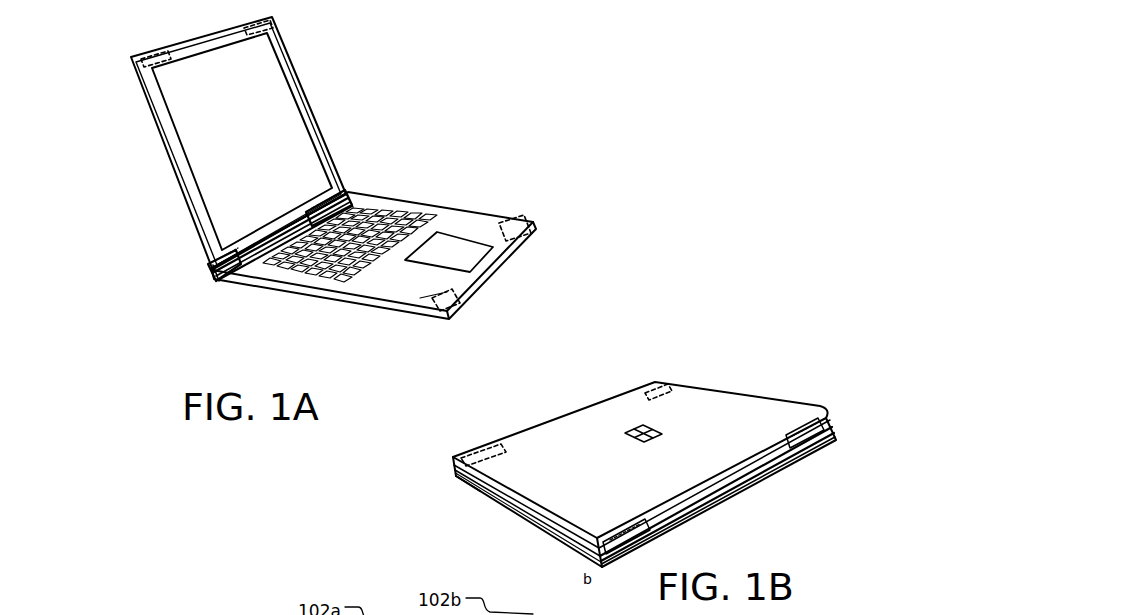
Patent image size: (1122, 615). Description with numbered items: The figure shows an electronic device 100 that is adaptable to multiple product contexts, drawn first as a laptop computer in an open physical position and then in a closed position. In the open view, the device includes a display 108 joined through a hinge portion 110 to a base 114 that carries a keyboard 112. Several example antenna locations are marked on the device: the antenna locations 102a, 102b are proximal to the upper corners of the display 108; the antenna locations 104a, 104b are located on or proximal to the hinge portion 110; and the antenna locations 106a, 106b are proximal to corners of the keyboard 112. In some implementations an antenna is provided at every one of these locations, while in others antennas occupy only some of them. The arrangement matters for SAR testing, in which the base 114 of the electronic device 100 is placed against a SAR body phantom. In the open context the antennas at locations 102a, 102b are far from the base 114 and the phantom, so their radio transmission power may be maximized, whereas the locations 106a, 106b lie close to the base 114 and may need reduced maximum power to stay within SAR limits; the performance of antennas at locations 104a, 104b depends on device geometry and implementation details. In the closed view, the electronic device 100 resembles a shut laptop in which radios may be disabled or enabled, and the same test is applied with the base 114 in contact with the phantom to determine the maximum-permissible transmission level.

In FIG. 1A, the electronic device 100 is at (384, 132).
In FIG. 1B, the electronic device 100 is at (733, 355).
In FIG. 1A, the antenna location 102a is at (163, 52).
In FIG. 1B, the antenna location 102a is at (655, 392).
In FIG. 1A, the antenna location 102b is at (254, 26).
In FIG. 1B, the antenna location 102b is at (474, 456).
In FIG. 1A, the antenna location 104a is at (206, 252).
In FIG. 1B, the antenna location 104a is at (645, 528).
In FIG. 1A, the antenna location 104b is at (316, 196).
In FIG. 1B, the antenna location 104b is at (813, 450).
In FIG. 1A, the antenna location 106a is at (444, 292).
In FIG. 1A, the antenna location 106b is at (514, 218).
In FIG. 1B, the antenna location 106b is at (455, 508).
In FIG. 1A, the display 108 is at (256, 122).
In FIG. 1A, the hinge portion 110 is at (212, 274).
In FIG. 1B, the hinge portion 110 is at (768, 476).
In FIG. 1A, the keyboard 112 is at (402, 210).
In FIG. 1A, the base 114 is at (278, 286).
In FIG. 1B, the base 114 is at (507, 503).